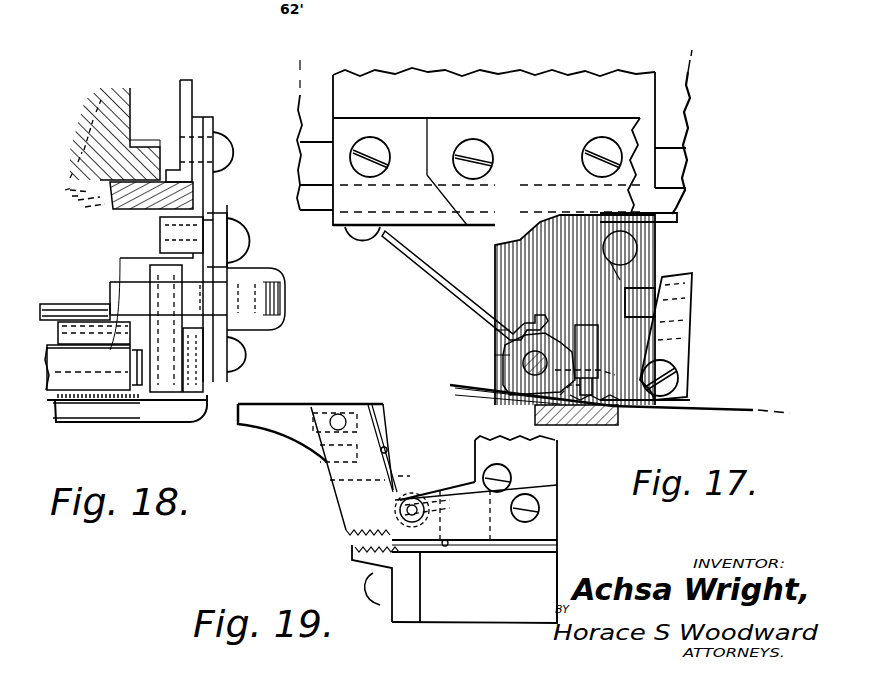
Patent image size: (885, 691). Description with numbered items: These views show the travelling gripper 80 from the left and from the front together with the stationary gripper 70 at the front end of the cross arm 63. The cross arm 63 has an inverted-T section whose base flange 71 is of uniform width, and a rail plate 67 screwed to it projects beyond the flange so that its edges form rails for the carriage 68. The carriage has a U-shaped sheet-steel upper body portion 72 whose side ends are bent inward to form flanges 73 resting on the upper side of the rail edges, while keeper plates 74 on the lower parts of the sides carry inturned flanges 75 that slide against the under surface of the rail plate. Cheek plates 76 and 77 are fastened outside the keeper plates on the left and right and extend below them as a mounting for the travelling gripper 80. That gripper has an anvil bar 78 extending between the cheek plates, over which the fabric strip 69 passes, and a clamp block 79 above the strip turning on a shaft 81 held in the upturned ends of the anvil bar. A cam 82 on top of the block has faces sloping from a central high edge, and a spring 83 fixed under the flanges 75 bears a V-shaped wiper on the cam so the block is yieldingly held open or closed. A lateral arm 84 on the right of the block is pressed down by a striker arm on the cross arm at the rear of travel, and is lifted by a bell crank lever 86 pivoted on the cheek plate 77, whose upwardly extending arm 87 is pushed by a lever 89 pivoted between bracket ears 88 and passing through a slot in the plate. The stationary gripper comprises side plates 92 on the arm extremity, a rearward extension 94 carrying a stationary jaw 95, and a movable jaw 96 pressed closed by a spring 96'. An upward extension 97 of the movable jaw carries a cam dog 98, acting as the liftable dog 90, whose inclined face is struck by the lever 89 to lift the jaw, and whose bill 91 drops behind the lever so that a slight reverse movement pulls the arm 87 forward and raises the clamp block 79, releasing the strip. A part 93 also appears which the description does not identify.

In FIG. 18, the cross arm 63 is at (98, 150).
In FIG. 17, the cross arm 63 is at (672, 122).
In FIG. 18, the rail plate 67 is at (97, 190).
In FIG. 17, the rail plate 67 is at (688, 204).
In FIG. 17, the carriage 68 is at (455, 85).
In FIG. 18, the fabric strip 69 is at (100, 407).
In FIG. 17, the fabric strip 69 is at (719, 404).
In FIG. 19, the gripper 70 is at (283, 505).
In FIG. 18, the base flange 71 is at (131, 145).
In FIG. 17, the base flange 71 is at (685, 156).
In FIG. 18, the upper body portion 72 is at (192, 95).
In FIG. 17, the upper body portion 72 is at (508, 88).
In FIG. 17, the flanges 73 is at (662, 186).
In FIG. 18, the keeper plates 74 is at (200, 117).
In FIG. 17, the keeper plates 74 is at (350, 138).
In FIG. 18, the inturned flanges 75 is at (180, 213).
In FIG. 17, the inturned flanges 75 is at (670, 218).
In FIG. 17, the cheek plate 76 is at (555, 148).
In FIG. 18, the cheek plate 77 is at (214, 136).
In FIG. 17, the cheek plate 77 is at (503, 268).
In FIG. 18, the anvil bar 78 is at (115, 407).
In FIG. 17, the anvil bar 78 is at (612, 422).
In FIG. 18, the clamp block 79 is at (188, 185).
In FIG. 17, the clamp block 79 is at (507, 406).
In FIG. 17, the travelling gripper 80 is at (752, 252).
In FIG. 17, the shaft 81 is at (515, 358).
In FIG. 18, the cam 82 is at (70, 322).
In FIG. 17, the cam 82 is at (497, 340).
In FIG. 18, the spring 83 is at (62, 322).
In FIG. 17, the spring 83 is at (469, 307).
In FIG. 18, the lateral arm 84 is at (121, 336).
In FIG. 17, the lateral arm 84 is at (586, 328).
In FIG. 18, the bell crank lever 86 is at (168, 395).
In FIG. 17, the bell crank lever 86 is at (670, 348).
In FIG. 18, the upwardly extending arm 87 is at (168, 330).
In FIG. 17, the upwardly extending arm 87 is at (680, 290).
In FIG. 18, the bracket ears 88 is at (229, 268).
In FIG. 17, the bracket ears 88 is at (652, 292).
In FIG. 18, the lever 89 is at (225, 293).
In FIG. 17, the lever 89 is at (636, 290).
In FIG. 19, the liftable dog 90 is at (375, 448).
In FIG. 19, the bill 91 is at (322, 446).
In FIG. 19, the side plates 92 is at (550, 495).
In FIG. 19, the roller 93 is at (474, 519).
In FIG. 19, the rearward extension 94 is at (472, 585).
In FIG. 19, the stationary jaw 95 is at (350, 556).
In FIG. 19, the movable jaw 96 is at (348, 522).
In FIG. 19, the spring 96' is at (400, 448).
In FIG. 19, the upward extension 97 is at (328, 477).
In FIG. 19, the cam dog 98 is at (280, 427).